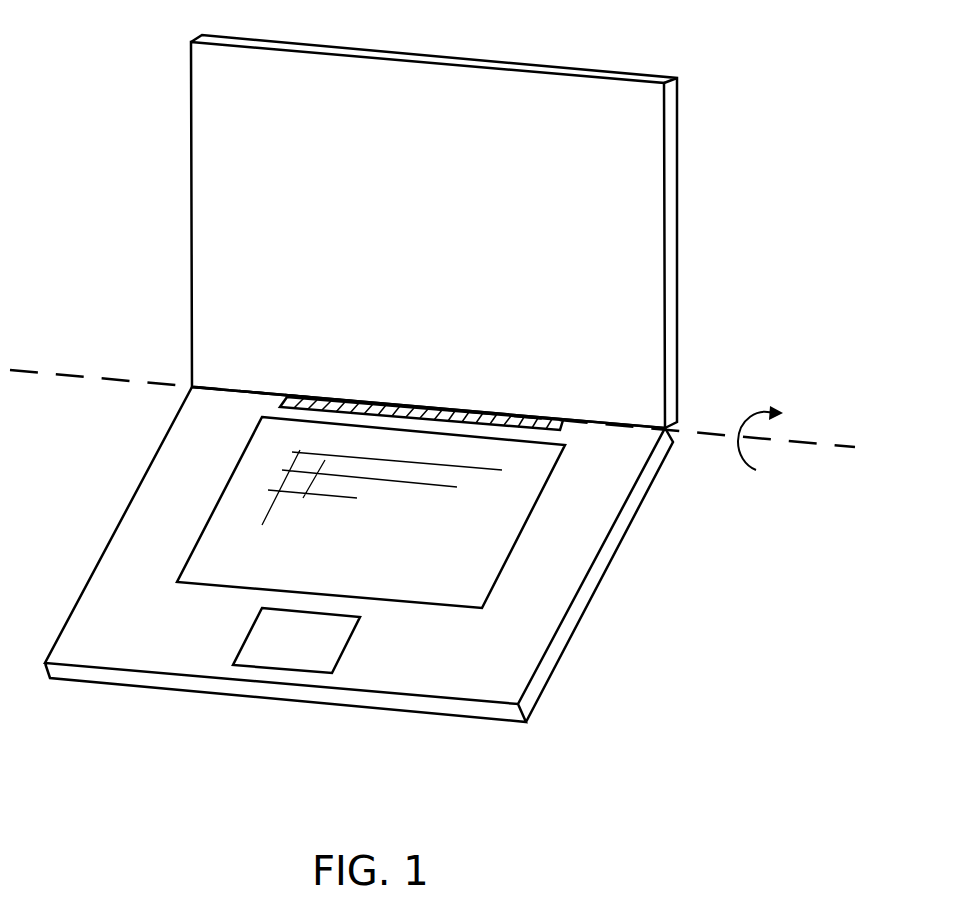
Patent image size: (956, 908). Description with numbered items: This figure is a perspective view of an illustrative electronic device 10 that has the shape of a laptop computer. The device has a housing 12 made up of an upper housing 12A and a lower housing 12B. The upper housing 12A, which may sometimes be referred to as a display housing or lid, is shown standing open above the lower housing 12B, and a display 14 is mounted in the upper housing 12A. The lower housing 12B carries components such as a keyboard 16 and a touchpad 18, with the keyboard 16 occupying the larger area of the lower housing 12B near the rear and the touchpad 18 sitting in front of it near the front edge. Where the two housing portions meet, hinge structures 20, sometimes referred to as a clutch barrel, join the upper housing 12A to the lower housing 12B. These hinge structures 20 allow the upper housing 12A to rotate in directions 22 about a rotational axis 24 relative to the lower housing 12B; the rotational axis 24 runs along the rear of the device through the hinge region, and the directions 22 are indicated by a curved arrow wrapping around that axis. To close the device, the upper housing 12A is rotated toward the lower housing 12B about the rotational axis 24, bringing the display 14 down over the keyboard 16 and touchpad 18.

The electronic device 10 is at (763, 71).
The housing 12 is at (678, 366).
The upper housing 12A is at (175, 43).
The lower housing 12B is at (168, 393).
The display 14 is at (582, 245).
The keyboard 16 is at (520, 533).
The touchpad 18 is at (343, 650).
The hinge structures 20 is at (537, 413).
The directions 22 is at (770, 468).
The rotational axis 24 is at (77, 373).